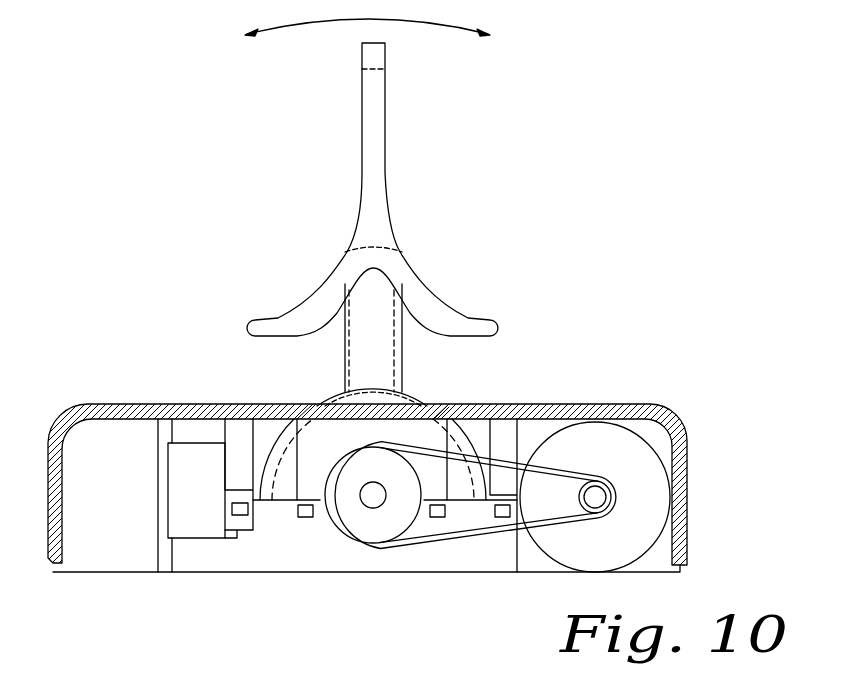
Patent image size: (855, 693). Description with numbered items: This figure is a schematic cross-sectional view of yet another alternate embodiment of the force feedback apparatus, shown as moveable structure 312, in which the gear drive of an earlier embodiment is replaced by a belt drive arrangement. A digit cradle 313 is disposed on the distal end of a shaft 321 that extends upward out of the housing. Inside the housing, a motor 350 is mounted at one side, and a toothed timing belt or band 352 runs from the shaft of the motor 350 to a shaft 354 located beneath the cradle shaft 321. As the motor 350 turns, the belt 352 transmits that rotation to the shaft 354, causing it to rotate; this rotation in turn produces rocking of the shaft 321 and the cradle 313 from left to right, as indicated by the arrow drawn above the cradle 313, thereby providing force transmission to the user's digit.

The moveable structure 312 is at (560, 302).
The cradle 313 is at (386, 75).
The shaft 321 is at (345, 334).
The motor 350 is at (638, 452).
The toothed timing belt or band 352 is at (441, 546).
The shaft 354 is at (368, 507).